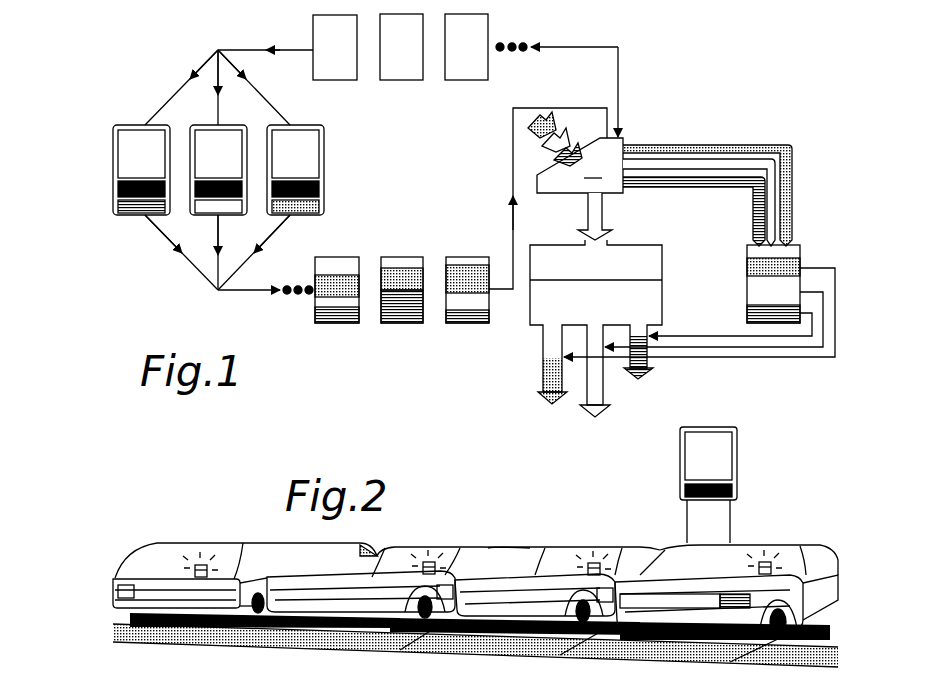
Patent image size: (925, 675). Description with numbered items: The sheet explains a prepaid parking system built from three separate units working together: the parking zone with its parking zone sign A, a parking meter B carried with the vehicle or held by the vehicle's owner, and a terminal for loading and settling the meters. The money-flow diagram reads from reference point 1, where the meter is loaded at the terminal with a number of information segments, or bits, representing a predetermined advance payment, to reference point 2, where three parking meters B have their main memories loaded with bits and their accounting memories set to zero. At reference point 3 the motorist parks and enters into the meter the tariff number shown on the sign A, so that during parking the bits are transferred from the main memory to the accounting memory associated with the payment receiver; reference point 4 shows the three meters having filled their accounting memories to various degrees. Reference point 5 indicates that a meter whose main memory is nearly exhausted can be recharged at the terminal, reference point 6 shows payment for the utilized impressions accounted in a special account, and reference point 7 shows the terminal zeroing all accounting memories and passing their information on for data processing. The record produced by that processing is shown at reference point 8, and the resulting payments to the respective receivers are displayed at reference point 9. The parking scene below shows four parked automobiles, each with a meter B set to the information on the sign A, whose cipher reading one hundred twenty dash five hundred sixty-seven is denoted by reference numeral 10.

In FIG. 1, the reference point for loading the meter at the terminal 1 is at (595, 120).
In FIG. 1, the reference point for loaded meters 2 is at (465, 66).
In FIG. 1, the reference point for parking and tariff entry 3 is at (229, 72).
In FIG. 1, the reference point for filled accounting memories 4 is at (229, 271).
In FIG. 1, the reference point for recharging the meter 5 is at (563, 139).
In FIG. 1, the reference point for accounting of payment 6 is at (607, 216).
In FIG. 1, the reference point for resetting and data transfer 7 is at (709, 177).
In FIG. 1, the result record 8 is at (789, 276).
In FIG. 1, the reference point for payments to receivers 9 is at (699, 312).
In FIG. 2, the cipher information 10 is at (737, 490).
In FIG. 1, the parking zone sign A is at (238, 170).
In FIG. 2, the parking zone sign A is at (737, 452).
In FIG. 1, the parking meter B is at (461, 215).